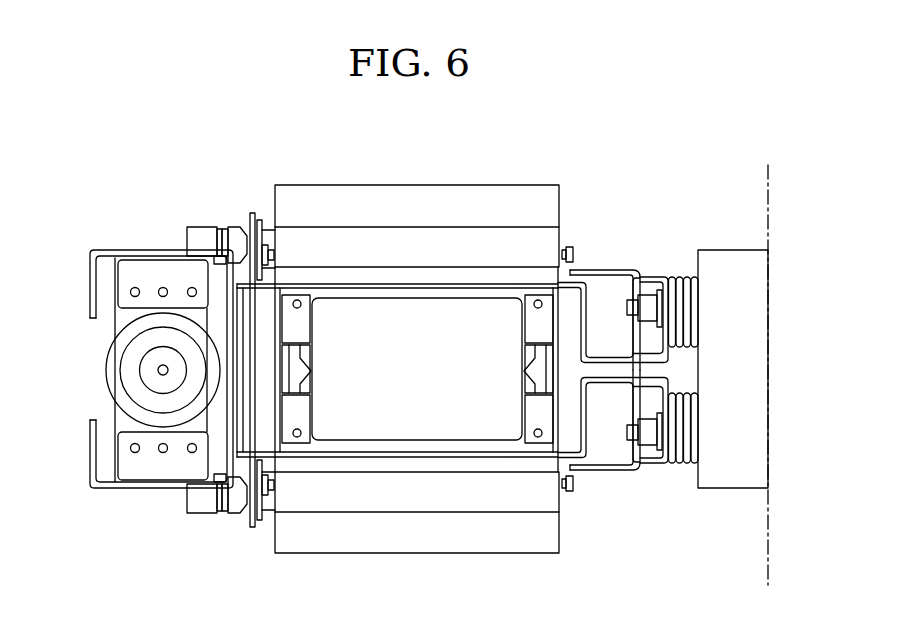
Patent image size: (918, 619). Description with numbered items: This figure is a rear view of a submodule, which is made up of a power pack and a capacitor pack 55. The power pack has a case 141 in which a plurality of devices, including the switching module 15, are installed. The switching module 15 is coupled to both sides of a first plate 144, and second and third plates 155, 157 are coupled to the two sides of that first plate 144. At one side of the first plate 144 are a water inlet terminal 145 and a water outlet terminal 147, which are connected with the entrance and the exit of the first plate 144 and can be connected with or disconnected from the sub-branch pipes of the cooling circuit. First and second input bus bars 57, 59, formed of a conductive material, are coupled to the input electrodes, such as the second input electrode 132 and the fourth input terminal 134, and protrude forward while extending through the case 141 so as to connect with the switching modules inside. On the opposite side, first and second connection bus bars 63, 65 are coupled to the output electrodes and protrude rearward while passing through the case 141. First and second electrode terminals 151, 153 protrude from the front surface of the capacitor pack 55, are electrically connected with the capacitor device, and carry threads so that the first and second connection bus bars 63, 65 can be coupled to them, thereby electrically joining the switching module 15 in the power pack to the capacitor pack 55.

The switching module 15 is at (431, 286).
The capacitor pack 55 is at (731, 262).
The first input bus bar 57 is at (92, 452).
The second input bus bar 59 is at (92, 289).
The first connection bus bar 63 is at (585, 458).
The second connection bus bar 65 is at (584, 283).
The second input electrode 132 is at (262, 468).
The fourth input terminal 134 is at (262, 283).
The case 141 is at (273, 196).
The first plate 144 is at (293, 377).
The water inlet terminal 145 is at (204, 512).
The water outlet terminal 147 is at (205, 232).
The first electrode terminal 151 is at (681, 465).
The second electrode terminal 153 is at (681, 277).
The second plate 155 is at (380, 470).
The third plate 157 is at (382, 268).